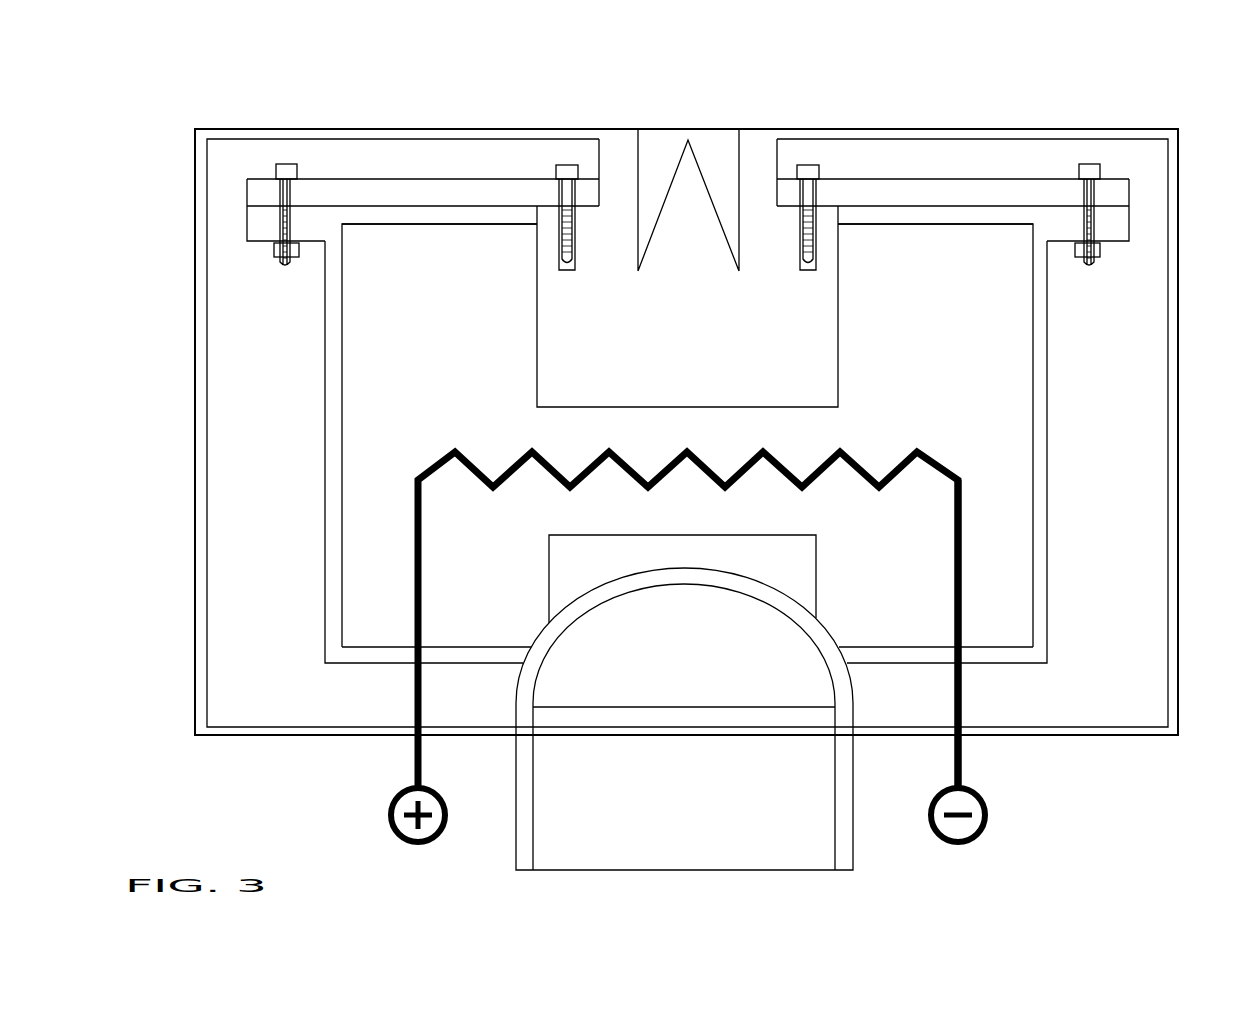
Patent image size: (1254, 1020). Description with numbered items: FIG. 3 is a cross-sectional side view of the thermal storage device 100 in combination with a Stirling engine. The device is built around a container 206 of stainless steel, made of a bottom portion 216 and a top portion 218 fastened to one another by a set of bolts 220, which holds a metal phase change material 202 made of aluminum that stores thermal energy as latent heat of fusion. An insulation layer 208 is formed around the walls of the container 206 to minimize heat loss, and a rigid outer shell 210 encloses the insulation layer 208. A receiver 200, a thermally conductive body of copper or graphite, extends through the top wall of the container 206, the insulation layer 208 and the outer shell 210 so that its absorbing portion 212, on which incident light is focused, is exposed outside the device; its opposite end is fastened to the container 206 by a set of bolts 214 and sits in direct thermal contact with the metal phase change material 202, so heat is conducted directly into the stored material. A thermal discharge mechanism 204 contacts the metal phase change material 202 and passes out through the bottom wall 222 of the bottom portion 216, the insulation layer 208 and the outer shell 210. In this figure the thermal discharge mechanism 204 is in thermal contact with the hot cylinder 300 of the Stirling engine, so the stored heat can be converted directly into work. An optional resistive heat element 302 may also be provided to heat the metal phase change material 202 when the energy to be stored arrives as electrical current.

The thermal storage device 100 is at (1220, 110).
The receiver 200 is at (820, 370).
The metal phase change material 202 is at (1018, 453).
The thermal discharge mechanism 204 is at (808, 600).
The container 206 is at (258, 231).
The insulation layer 208 is at (1153, 596).
The outer shell 210 is at (1170, 476).
The absorbing portion 212 is at (724, 88).
The bolts 214 is at (809, 178).
The bottom portion 216 is at (425, 217).
The top portion 218 is at (415, 195).
The bolts 220 is at (289, 170).
The bottom wall 222 is at (503, 646).
The hot cylinder 300 is at (843, 807).
The resistive heat element 302 is at (960, 590).